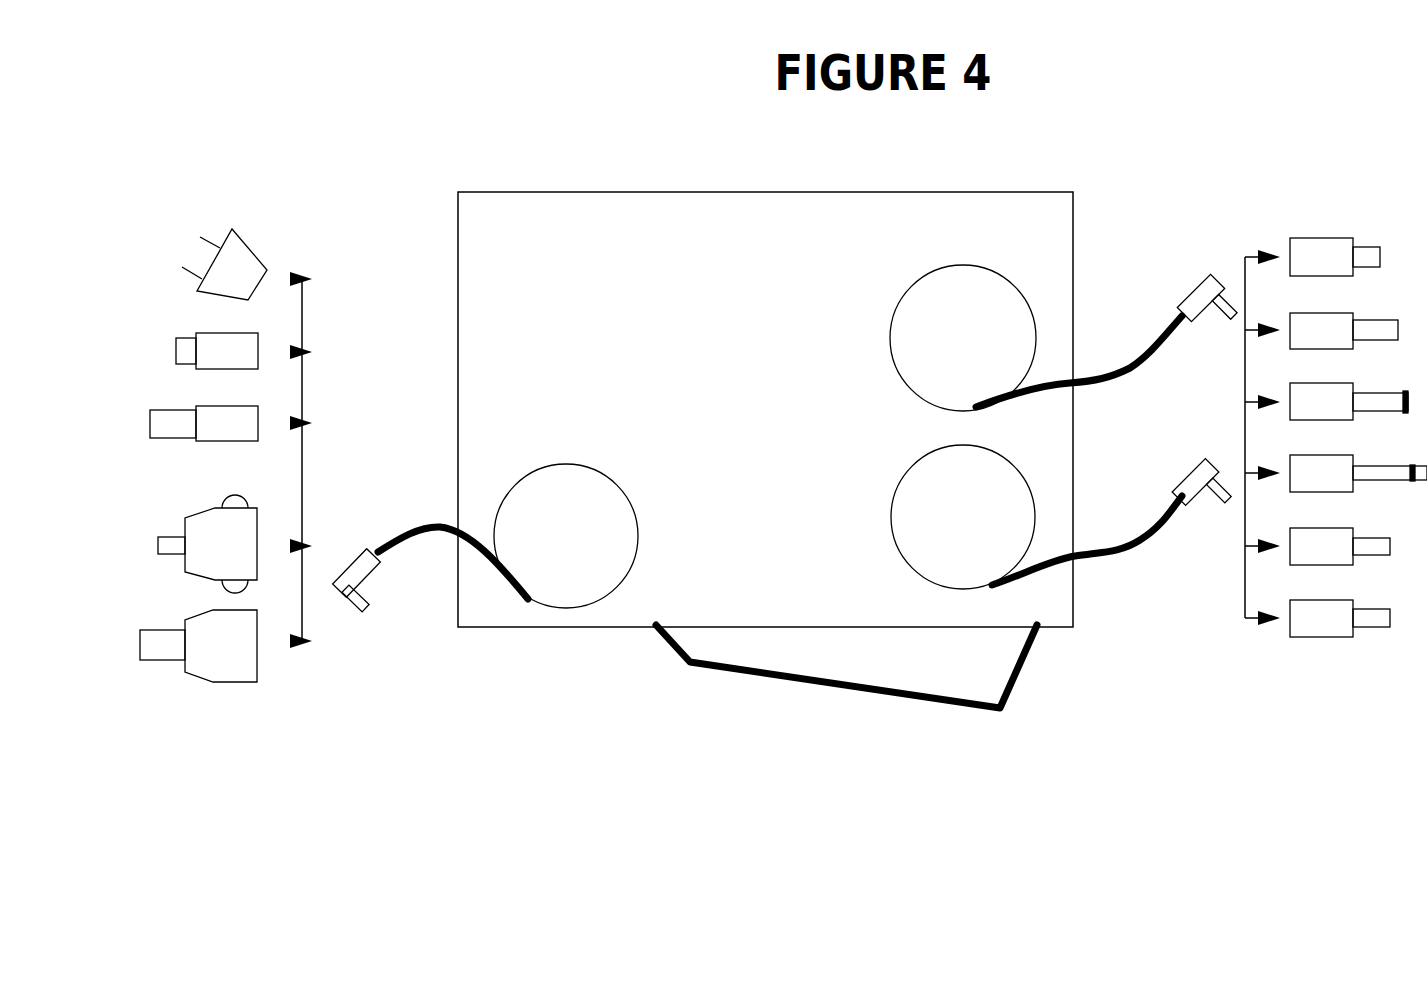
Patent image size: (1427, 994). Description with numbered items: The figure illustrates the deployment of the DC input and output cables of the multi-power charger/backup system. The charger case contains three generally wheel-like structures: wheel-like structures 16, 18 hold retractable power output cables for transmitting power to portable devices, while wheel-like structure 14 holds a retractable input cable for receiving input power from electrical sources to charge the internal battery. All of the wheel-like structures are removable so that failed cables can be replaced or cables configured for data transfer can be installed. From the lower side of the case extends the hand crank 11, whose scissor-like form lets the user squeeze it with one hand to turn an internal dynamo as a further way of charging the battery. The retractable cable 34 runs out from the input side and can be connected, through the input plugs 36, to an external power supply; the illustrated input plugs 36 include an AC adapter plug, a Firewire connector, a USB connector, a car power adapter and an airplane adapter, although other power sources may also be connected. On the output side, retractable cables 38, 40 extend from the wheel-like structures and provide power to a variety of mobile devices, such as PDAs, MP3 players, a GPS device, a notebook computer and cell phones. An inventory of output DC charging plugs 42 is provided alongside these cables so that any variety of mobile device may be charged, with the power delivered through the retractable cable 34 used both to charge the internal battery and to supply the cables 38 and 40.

The hand crank 11 is at (1025, 668).
The wheel-like structure 14 is at (638, 537).
The wheel-like structure 16 is at (890, 338).
The wheel-like structure 18 is at (890, 518).
The retractable cable 34 is at (432, 527).
The input plugs 36 is at (293, 254).
The retractable cable 38 is at (1110, 373).
The retractable cable 40 is at (1093, 556).
The output DC charging plugs 42 is at (1270, 235).